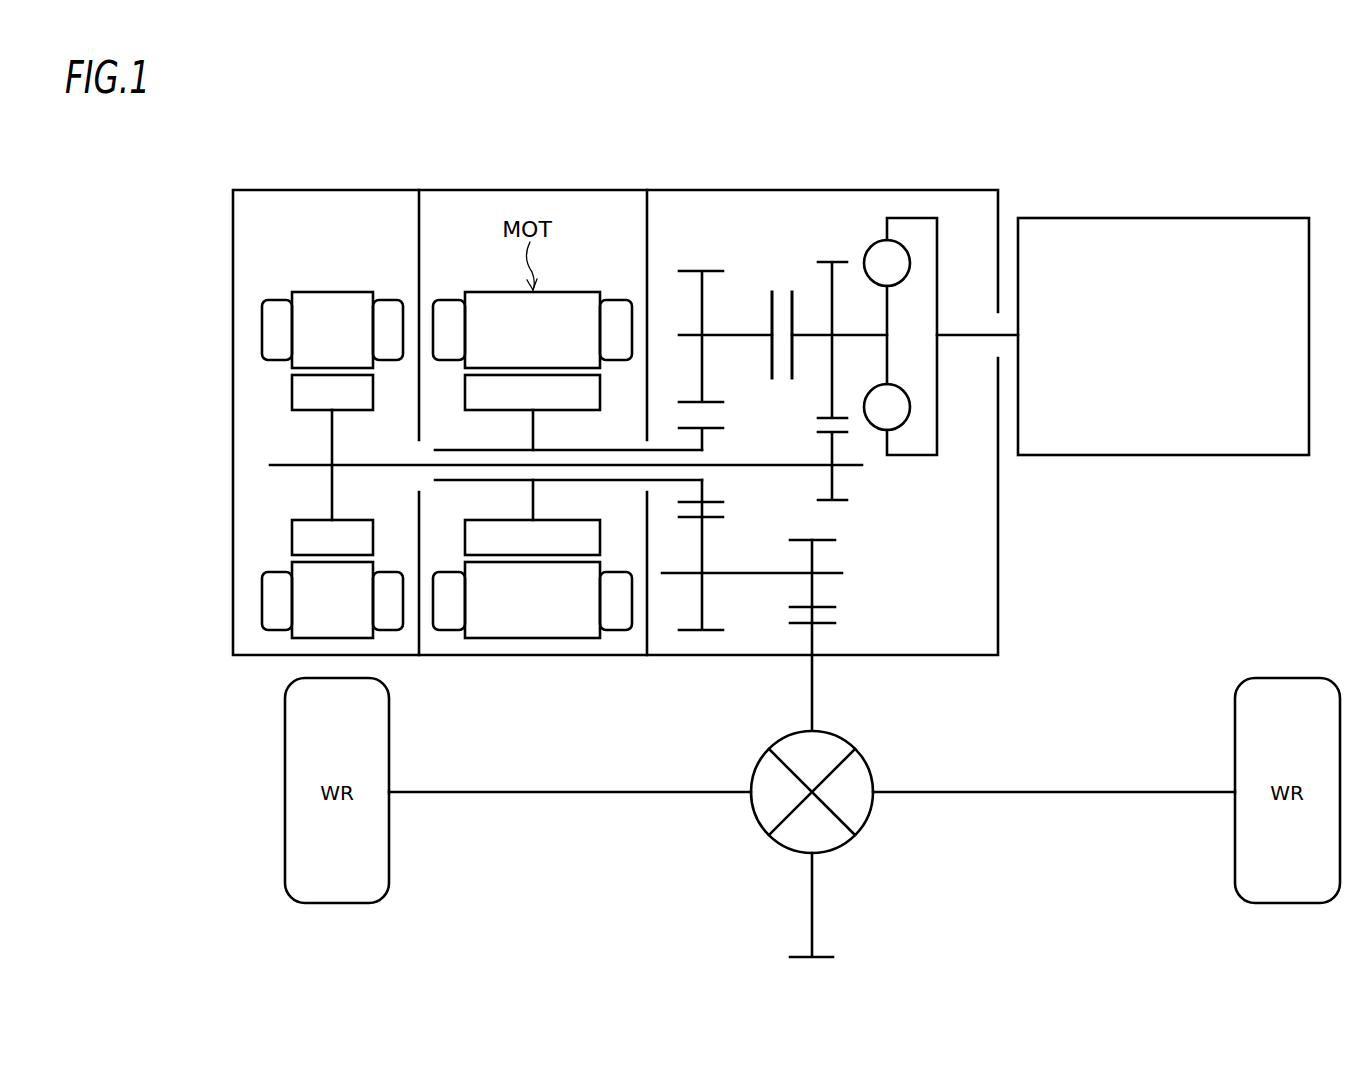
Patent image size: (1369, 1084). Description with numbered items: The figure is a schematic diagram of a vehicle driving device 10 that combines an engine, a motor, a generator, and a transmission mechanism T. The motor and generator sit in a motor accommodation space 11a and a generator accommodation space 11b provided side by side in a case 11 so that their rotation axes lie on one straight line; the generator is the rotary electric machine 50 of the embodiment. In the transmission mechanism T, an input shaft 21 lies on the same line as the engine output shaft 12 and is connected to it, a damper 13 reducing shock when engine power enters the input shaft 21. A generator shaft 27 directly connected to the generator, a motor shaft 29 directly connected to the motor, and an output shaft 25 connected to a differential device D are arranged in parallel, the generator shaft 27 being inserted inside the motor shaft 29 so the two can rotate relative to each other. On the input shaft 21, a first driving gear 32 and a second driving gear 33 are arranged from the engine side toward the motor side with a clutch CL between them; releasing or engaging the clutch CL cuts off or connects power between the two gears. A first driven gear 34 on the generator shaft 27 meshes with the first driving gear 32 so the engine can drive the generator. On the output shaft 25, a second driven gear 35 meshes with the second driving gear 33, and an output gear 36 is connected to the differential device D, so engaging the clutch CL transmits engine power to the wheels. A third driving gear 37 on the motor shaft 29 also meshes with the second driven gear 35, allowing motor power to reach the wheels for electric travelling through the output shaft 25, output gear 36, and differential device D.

The vehicle driving device 10 is at (1198, 122).
The case 11 is at (710, 190).
The motor accommodation space 11a is at (592, 207).
The generator accommodation space 11b is at (376, 207).
The rotary electric machine 50 is at (322, 290).
The engine output shaft 12 is at (1006, 334).
The damper 13 is at (908, 228).
The input shaft 21 is at (877, 383).
The output shaft 25 is at (832, 574).
The generator shaft 27 is at (755, 468).
The motor shaft 29 is at (665, 450).
The first driving gear 32 is at (833, 308).
The second driving gear 33 is at (705, 298).
The first driven gear 34 is at (836, 482).
The second driven gear 35 is at (690, 633).
The output gear 36 is at (830, 610).
The third driving gear 37 is at (716, 430).
The clutch CL is at (783, 287).
The transmission mechanism T is at (887, 192).
The differential device D is at (870, 815).